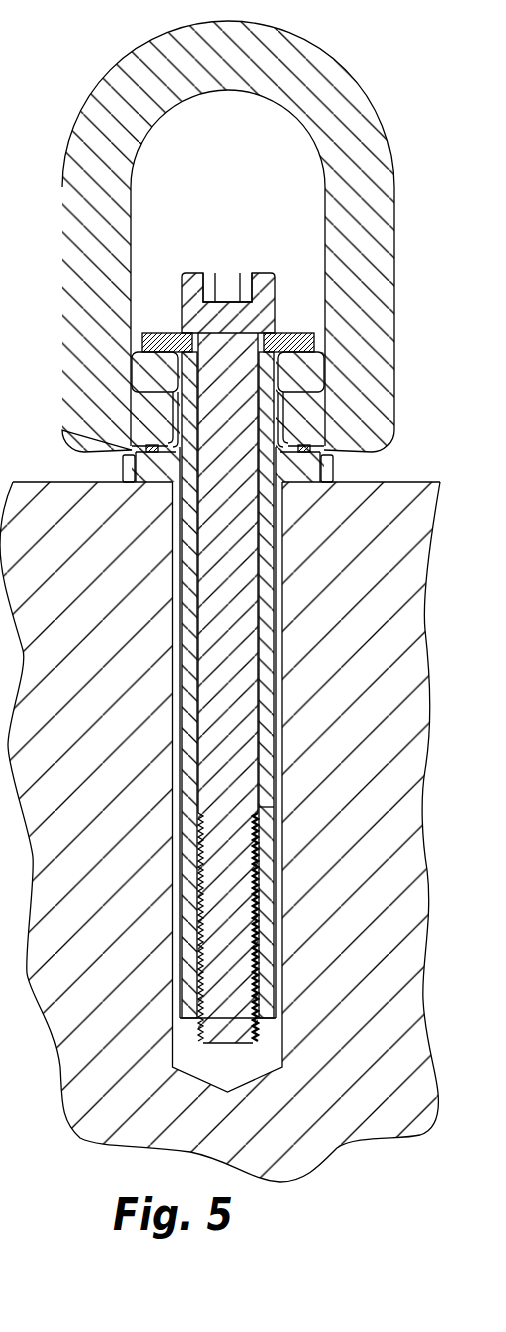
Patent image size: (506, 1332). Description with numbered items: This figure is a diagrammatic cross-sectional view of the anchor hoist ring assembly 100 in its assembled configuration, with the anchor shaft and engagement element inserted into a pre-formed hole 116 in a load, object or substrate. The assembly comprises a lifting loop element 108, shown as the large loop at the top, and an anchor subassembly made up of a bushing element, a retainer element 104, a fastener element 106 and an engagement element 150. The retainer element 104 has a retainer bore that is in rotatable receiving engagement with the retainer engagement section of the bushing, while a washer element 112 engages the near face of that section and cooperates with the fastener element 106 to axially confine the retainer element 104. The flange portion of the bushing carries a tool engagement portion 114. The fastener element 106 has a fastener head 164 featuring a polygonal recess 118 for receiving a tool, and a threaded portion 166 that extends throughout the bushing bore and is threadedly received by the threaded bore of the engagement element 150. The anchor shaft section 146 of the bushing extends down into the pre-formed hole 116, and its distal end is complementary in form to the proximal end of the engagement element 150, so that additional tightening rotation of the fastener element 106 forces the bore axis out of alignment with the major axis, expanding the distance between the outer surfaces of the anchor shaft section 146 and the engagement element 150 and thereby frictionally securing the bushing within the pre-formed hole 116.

The anchor hoist ring assembly 100 is at (457, 126).
The retainer element 104 is at (313, 373).
The fastener element 106 is at (230, 743).
The lifting loop element 108 is at (117, 82).
The washer element 112 is at (273, 332).
The tool engagement portion 114 is at (128, 470).
The pre-formed hole 116 is at (257, 1065).
The polygonal recess 118 is at (227, 283).
The anchor shaft section 146 is at (268, 663).
The engagement element 150 is at (267, 895).
The fastener head 164 is at (182, 302).
The threaded portion 166 is at (245, 958).